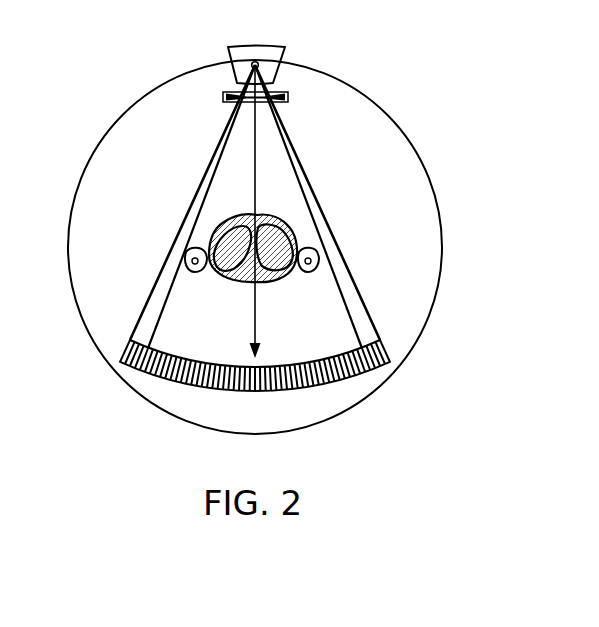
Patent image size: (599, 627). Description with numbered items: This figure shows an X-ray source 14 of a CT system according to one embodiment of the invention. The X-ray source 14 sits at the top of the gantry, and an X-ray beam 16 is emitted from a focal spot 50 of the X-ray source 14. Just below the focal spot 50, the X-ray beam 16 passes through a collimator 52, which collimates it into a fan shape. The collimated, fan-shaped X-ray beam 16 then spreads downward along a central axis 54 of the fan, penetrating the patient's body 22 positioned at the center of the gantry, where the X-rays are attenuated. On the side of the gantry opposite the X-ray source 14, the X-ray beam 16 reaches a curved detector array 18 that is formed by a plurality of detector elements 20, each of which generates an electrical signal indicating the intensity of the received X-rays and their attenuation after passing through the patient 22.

The X-ray source 14 is at (281, 57).
The X-ray beam 16 is at (320, 170).
The detector array 18 is at (397, 344).
The detector elements 20 is at (191, 396).
The patient's body 22 is at (277, 217).
The focal spot 50 is at (252, 63).
The collimator 52 is at (289, 97).
The central axis 54 is at (258, 303).